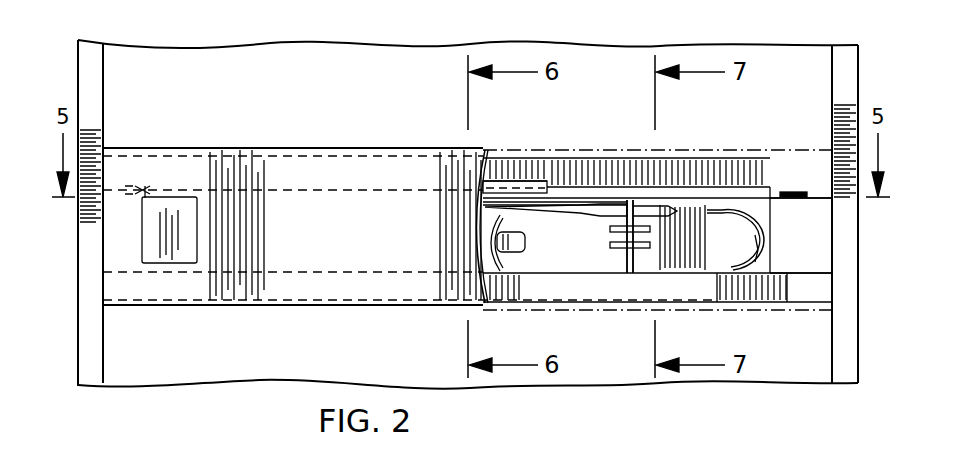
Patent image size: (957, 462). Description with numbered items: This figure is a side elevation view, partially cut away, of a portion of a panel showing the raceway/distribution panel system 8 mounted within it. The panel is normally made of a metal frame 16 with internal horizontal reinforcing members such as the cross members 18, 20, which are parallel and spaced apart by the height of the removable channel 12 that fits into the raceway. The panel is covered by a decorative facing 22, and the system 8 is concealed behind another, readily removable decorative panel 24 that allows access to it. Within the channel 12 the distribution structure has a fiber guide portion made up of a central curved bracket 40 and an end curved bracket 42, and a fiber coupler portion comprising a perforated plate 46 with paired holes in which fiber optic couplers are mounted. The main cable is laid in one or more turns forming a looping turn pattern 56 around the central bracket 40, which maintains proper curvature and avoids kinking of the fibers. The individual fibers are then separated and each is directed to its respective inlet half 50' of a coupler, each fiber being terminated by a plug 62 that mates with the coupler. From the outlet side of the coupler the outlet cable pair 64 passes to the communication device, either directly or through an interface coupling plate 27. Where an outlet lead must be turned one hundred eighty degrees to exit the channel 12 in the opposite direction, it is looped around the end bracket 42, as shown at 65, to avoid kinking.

The raceway/distribution panel system 8 is at (545, 278).
The removable channel 12 is at (777, 222).
The metal frame 16 is at (93, 58).
The cross member 18 is at (515, 162).
The cross member 20 is at (517, 292).
The decorative facing 22 is at (415, 57).
The decorative panel 24 is at (323, 170).
The interface coupling plate 27 is at (160, 262).
The central curved bracket 40 is at (470, 272).
The end curved bracket 42 is at (728, 272).
The perforated plate 46 is at (625, 265).
The inlet half of coupler 50' is at (605, 193).
The looping turn pattern 56 is at (510, 226).
The plug 62 is at (596, 218).
The outlet cable pair 64 is at (707, 210).
The loop around end bracket 65 is at (758, 250).